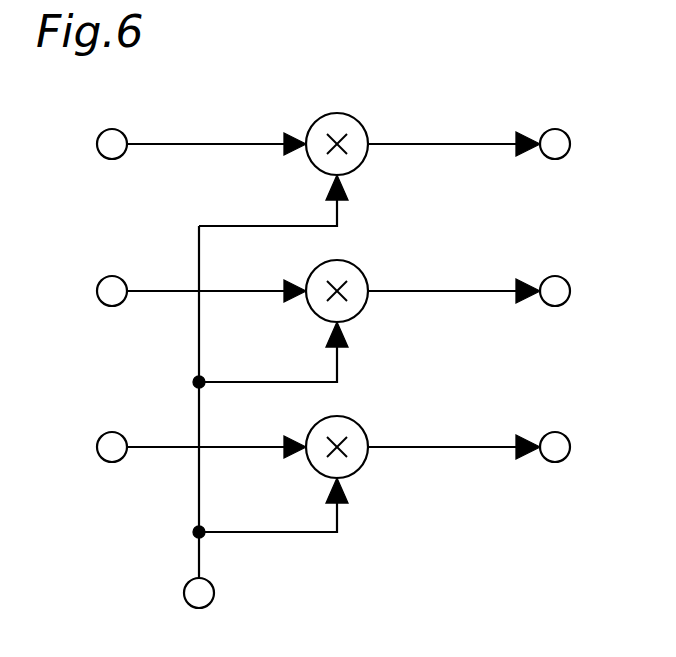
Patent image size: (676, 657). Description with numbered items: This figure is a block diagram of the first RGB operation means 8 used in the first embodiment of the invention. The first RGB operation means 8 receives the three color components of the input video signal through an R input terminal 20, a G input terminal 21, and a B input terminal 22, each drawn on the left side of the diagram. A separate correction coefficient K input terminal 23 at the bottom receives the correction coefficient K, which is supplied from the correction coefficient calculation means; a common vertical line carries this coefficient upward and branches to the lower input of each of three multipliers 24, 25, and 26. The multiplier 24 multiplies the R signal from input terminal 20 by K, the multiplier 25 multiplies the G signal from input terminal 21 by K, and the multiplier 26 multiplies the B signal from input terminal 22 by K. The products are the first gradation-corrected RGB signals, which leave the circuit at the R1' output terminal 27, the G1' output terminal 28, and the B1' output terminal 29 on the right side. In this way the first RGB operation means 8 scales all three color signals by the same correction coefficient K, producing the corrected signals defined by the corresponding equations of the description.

The first RGB operation means 8 is at (424, 122).
The R input terminal 20 is at (115, 159).
The G input terminal 21 is at (115, 306).
The B input terminal 22 is at (115, 462).
The correction coefficient K input terminal 23 is at (213, 586).
The multiplier 24 is at (360, 166).
The multiplier 25 is at (360, 313).
The multiplier 26 is at (360, 468).
The R1' output terminal 27 is at (562, 160).
The G1' output terminal 28 is at (562, 307).
The B1' output terminal 29 is at (562, 463).